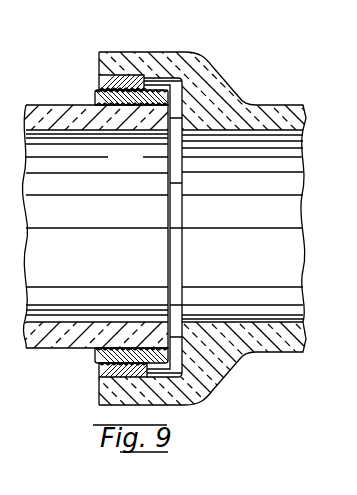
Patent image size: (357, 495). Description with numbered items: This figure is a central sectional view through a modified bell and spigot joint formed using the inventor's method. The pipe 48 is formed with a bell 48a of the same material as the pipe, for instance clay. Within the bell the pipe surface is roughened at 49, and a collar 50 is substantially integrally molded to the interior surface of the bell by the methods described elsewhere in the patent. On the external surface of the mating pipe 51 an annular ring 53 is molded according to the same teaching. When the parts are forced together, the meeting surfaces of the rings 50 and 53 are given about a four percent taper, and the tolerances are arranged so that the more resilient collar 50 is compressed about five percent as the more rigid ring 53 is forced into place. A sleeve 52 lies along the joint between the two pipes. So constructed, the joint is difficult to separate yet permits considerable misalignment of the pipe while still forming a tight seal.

The pipe 48 is at (178, 241).
The bell 48a is at (138, 52).
The roughened surface 49 is at (114, 79).
The collar 50 is at (99, 78).
The pipe 51 is at (62, 349).
The sleeve 52 is at (146, 102).
The annular ring 53 is at (97, 98).